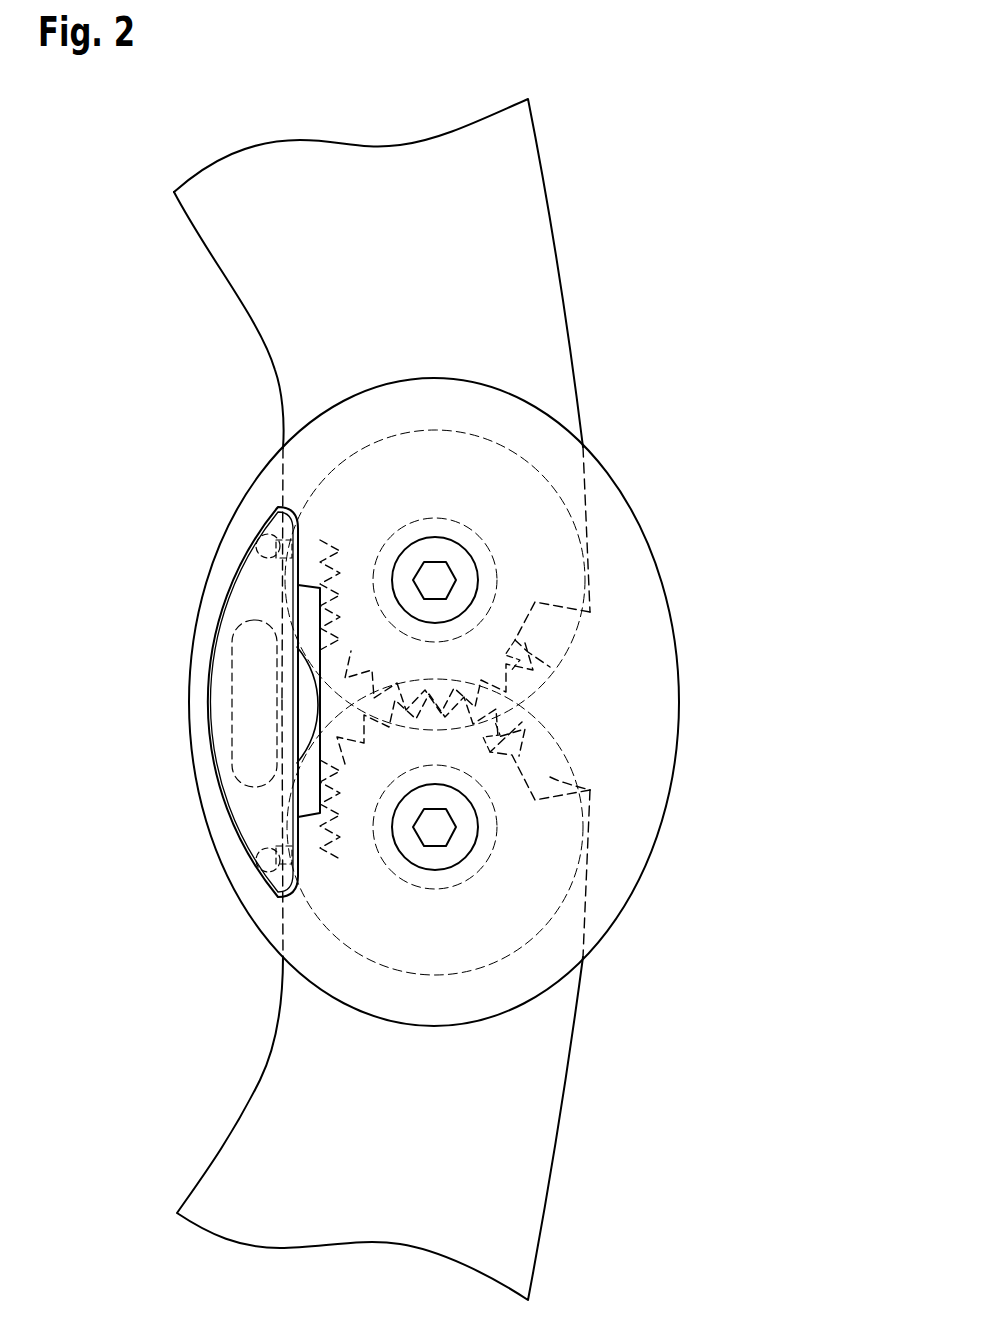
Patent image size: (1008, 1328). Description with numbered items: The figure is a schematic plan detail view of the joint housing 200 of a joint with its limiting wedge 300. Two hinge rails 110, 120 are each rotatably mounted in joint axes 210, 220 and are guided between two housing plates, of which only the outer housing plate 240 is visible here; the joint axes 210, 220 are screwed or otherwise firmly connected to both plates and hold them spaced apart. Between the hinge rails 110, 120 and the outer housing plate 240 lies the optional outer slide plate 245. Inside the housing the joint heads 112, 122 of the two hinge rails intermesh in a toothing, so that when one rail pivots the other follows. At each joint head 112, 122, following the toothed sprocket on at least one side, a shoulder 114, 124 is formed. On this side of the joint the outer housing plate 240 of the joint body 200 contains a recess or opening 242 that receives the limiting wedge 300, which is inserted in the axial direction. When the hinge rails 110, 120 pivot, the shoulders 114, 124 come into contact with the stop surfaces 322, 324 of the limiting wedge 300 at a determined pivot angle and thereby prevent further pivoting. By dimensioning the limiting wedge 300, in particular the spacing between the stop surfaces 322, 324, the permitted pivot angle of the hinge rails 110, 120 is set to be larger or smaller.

The hinge rail 110 is at (537, 257).
The hinge rail 120 is at (537, 1147).
The joint head 112 is at (550, 667).
The joint head 122 is at (522, 722).
The shoulder 114 is at (280, 570).
The shoulder 124 is at (277, 830).
The joint housing 200 is at (738, 652).
The joint axis 210 is at (480, 566).
The joint axis 220 is at (478, 832).
The outer housing plate 240 is at (650, 615).
The recess or opening 242 is at (212, 742).
The outer slide plate 245 is at (550, 777).
The limiting wedge 300 is at (203, 702).
The stop surface 322 is at (265, 532).
The stop surface 324 is at (253, 880).